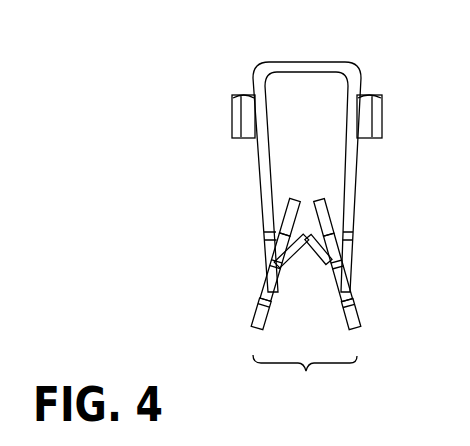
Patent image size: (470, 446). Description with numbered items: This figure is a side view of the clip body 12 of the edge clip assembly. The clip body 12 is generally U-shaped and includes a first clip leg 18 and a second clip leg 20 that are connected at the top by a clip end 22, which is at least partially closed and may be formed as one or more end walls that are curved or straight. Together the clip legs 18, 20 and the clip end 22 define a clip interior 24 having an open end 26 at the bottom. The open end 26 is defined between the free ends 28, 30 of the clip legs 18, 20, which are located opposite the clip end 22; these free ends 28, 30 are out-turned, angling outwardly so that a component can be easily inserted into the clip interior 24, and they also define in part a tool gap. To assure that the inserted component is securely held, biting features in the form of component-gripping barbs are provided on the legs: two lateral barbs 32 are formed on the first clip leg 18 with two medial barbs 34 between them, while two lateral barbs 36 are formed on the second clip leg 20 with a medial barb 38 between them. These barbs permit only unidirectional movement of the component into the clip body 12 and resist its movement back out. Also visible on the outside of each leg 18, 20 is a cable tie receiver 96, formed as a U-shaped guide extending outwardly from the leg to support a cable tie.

The clip body 12 is at (136, 96).
The clip end 22 is at (308, 62).
The clip interior 24 is at (310, 125).
The cable tie receiver 96 is at (229, 108).
The second clip leg 20 is at (259, 228).
The first clip leg 18 is at (360, 229).
The medial barb 38 is at (297, 197).
The medial barb 34 is at (315, 197).
The lateral barb 36 is at (284, 238).
The lateral barb 32 is at (327, 240).
The free end 30 is at (261, 314).
The free end 28 is at (352, 316).
The open end 26 is at (305, 380).